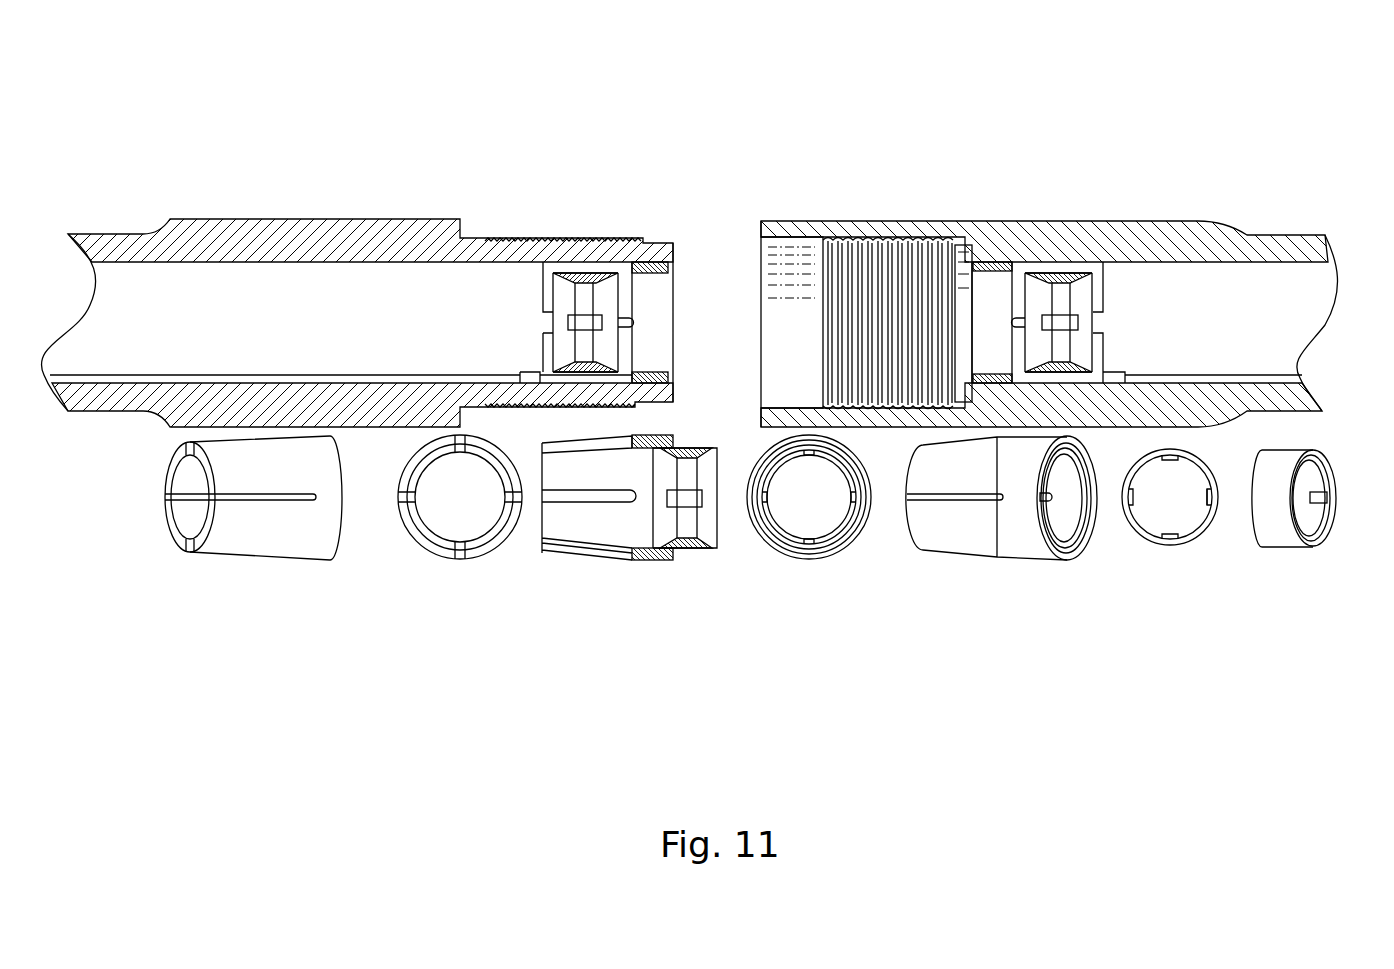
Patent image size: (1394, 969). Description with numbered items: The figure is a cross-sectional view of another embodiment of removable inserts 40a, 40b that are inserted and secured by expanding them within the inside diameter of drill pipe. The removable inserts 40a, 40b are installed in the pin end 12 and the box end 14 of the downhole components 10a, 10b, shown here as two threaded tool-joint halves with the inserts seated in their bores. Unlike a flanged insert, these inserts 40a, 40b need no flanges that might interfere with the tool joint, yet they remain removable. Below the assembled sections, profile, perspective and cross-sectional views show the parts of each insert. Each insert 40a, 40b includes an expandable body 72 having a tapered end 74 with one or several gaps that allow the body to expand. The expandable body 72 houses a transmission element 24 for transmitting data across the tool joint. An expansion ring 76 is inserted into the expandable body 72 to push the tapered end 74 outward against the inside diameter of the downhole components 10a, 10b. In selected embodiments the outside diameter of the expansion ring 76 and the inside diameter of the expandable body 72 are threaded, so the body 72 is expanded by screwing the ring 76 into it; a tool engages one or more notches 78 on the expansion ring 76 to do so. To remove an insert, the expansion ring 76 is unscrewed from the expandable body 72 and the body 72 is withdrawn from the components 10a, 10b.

The downhole component 10a is at (378, 251).
The downhole component 10b is at (1049, 253).
The pin end 12 is at (607, 187).
The box end 14 is at (873, 200).
The removable insert 40a is at (630, 243).
The removable insert 40b is at (1040, 253).
The expandable body 72 is at (573, 267).
The tapered end 74 is at (177, 537).
The expansion ring 76 is at (555, 300).
The notch 78 is at (1217, 498).
The transmission element 24 is at (817, 550).